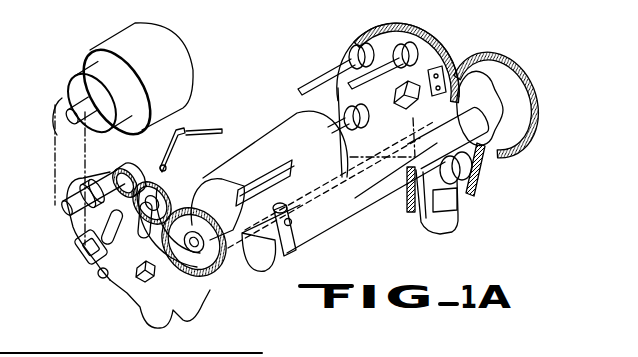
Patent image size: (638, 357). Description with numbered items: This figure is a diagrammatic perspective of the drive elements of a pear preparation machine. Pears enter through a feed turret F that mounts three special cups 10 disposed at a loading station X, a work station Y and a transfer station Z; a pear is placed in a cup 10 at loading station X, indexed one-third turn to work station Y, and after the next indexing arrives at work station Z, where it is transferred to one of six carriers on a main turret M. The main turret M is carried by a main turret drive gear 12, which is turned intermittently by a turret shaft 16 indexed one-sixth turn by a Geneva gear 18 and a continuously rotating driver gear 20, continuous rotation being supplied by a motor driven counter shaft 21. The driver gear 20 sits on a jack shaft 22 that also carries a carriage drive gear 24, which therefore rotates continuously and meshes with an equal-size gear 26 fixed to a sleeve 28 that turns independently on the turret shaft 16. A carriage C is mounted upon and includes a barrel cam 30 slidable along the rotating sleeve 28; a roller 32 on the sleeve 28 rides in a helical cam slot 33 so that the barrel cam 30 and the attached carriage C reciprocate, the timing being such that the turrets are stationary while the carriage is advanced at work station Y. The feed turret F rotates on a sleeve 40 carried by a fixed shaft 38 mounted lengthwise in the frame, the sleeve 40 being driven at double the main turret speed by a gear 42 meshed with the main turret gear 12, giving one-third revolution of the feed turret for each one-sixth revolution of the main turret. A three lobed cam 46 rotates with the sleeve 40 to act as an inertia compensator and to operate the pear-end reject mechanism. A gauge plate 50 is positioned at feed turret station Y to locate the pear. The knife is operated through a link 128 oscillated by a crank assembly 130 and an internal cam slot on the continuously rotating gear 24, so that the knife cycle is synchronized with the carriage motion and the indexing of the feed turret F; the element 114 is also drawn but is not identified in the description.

The cup 10 is at (437, 231).
The main turret drive gear 12 is at (440, 65).
The turret shaft 16 is at (128, 262).
The Geneva gear 18 is at (130, 303).
The driver gear 20 is at (68, 185).
The motor driven counter shaft 21 is at (78, 207).
The jack shaft 22 is at (80, 257).
The carriage drive gear 24 is at (146, 168).
The gear 26 is at (207, 275).
The sleeve 28 is at (237, 268).
The barrel cam 30 is at (330, 224).
The roller 32 is at (286, 240).
The helical cam slot 33 is at (292, 157).
The fixed shaft 38 is at (353, 214).
The sleeve 40 is at (480, 163).
The gear 42 is at (533, 67).
The three lobed cam 46 is at (525, 152).
The gauge plate 50 is at (442, 75).
The push rod 114 is at (337, 67).
The link 128 is at (232, 100).
The crank assembly 130 is at (228, 122).
The carriage C is at (252, 147).
The main turret M is at (343, 43).
The work station Z is at (353, 147).
The work station Y is at (418, 75).
The loading station X is at (446, 234).
The feed turret F is at (465, 230).